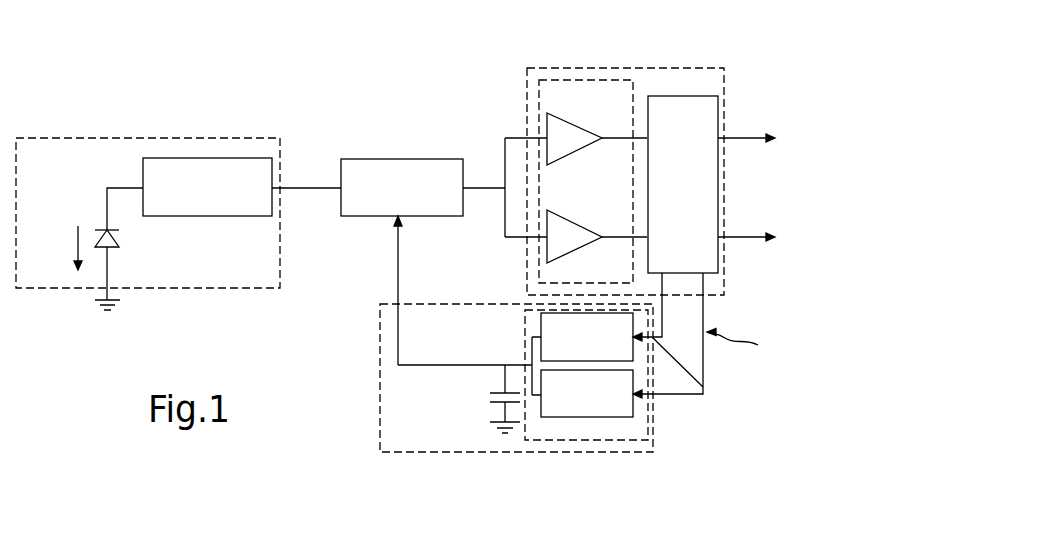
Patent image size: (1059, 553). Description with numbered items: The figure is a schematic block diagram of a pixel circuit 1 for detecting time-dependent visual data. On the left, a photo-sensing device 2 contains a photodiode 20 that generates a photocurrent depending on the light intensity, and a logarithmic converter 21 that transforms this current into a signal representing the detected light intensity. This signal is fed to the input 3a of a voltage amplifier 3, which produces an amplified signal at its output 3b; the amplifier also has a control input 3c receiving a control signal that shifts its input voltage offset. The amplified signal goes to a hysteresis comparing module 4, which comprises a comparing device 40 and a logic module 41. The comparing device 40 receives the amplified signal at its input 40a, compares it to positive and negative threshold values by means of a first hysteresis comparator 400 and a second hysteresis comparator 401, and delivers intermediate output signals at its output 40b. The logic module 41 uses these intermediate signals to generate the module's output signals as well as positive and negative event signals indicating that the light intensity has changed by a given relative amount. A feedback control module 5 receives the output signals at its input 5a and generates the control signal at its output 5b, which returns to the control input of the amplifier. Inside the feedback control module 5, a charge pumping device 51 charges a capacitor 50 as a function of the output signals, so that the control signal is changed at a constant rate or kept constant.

The pixel circuit 1 is at (98, 66).
The photo-sensing device 2 is at (58, 138).
The photodiode 20 is at (116, 244).
The logarithmic converter 21 is at (207, 216).
The voltage amplifier 3 is at (393, 158).
The input 3a is at (324, 190).
The output 3b is at (468, 190).
The control input 3c is at (396, 218).
The hysteresis comparing module 4 is at (628, 66).
The comparing device 40 is at (532, 84).
The first hysteresis comparator 400 is at (563, 125).
The second hysteresis comparator 401 is at (565, 233).
The input 40a is at (535, 132).
The output 40b is at (633, 134).
The logic module 41 is at (672, 94).
The feedback control module 5 is at (616, 453).
The input 5a is at (655, 392).
The output 5b is at (398, 306).
The capacitor 50 is at (503, 400).
The charge pumping device 51 is at (570, 441).